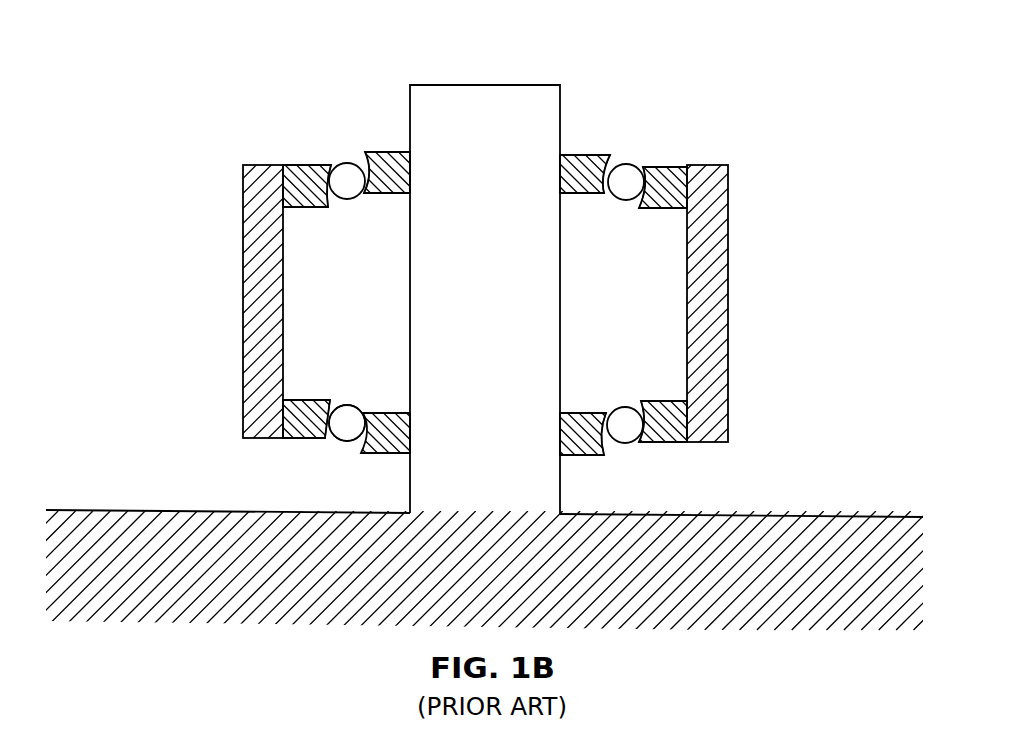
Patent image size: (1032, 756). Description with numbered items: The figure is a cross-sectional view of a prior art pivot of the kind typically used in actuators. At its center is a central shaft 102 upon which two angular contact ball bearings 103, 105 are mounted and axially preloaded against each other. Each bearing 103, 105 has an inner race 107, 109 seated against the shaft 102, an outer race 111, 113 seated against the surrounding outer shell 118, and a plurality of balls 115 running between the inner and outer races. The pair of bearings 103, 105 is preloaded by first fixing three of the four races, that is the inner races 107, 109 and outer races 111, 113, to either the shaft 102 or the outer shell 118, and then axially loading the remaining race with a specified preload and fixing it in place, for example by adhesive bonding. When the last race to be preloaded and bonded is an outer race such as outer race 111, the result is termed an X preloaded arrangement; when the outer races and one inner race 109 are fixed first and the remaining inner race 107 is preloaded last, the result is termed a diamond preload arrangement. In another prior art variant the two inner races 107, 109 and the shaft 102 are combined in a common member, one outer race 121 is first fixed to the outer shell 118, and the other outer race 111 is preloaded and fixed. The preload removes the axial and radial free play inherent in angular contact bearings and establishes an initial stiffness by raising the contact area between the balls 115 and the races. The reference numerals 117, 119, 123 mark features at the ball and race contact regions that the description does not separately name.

The central shaft 102 is at (460, 88).
The angular contact ball bearing 103 is at (650, 128).
The angular contact ball bearing 105 is at (658, 458).
The inner race 107 is at (393, 153).
The inner race 109 is at (388, 413).
The outer race 111 is at (306, 165).
The outer race 113 is at (316, 400).
The balls 115 is at (349, 192).
The upper outer raceway groove 117 is at (333, 165).
The outer shell 118 is at (243, 263).
The upper inner raceway groove 119 is at (366, 195).
The outer race 121 is at (330, 440).
The lower contact point 123 is at (358, 407).